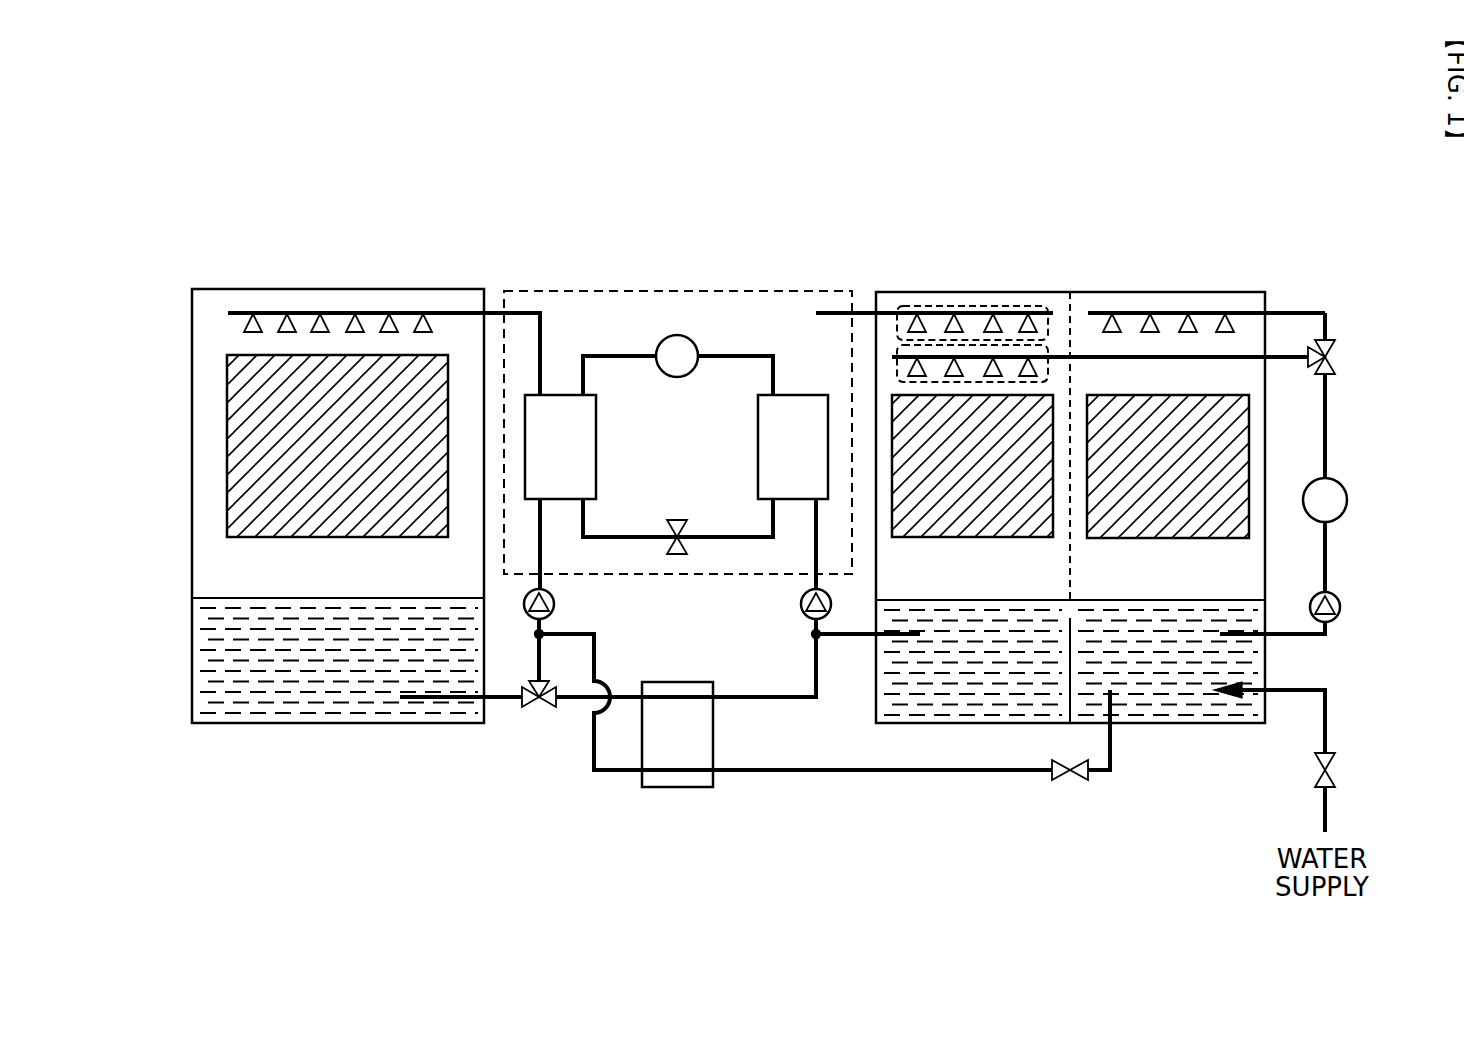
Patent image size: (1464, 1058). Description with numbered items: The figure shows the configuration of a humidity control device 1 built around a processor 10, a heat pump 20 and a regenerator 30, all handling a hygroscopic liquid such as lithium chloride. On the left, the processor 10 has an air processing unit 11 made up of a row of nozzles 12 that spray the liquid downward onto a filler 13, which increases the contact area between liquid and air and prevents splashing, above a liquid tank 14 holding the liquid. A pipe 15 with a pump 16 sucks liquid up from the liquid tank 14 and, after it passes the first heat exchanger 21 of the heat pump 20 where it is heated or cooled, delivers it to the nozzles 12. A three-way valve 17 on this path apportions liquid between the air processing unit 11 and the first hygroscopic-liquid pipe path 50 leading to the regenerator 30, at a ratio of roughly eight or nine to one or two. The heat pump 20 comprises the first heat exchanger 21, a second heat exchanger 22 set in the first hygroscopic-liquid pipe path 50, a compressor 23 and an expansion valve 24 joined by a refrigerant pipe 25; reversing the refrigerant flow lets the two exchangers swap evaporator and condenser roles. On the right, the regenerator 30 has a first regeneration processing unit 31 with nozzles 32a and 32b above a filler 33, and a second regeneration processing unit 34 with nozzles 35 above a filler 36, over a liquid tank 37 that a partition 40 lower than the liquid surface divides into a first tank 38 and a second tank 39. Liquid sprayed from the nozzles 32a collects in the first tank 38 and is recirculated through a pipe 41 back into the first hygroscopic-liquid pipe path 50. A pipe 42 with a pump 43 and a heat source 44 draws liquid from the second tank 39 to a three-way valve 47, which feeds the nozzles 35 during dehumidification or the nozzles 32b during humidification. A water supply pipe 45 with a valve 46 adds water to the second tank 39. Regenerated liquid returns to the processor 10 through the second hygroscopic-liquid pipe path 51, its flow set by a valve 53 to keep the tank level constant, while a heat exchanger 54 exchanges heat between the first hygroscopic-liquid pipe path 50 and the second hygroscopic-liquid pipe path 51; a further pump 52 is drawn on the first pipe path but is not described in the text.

The humidity control device 1 is at (702, 182).
The processor 10 is at (455, 289).
The air processing unit 11 is at (355, 214).
The nozzles 12 is at (423, 312).
The filler 13 is at (237, 387).
The liquid tank 14 is at (200, 655).
The pipe 15 is at (512, 313).
The pump 16 is at (554, 604).
The three-way valve 17 is at (535, 707).
The heat pump 20 is at (677, 291).
The first heat exchanger 21 is at (596, 447).
The second heat exchanger 22 is at (758, 447).
The compressor 23 is at (697, 347).
The expansion valve 24 is at (680, 518).
The refrigerant pipe 25 is at (600, 356).
The regenerator 30 is at (1088, 292).
The first regeneration processing unit 31 is at (1085, 214).
The nozzles 32a is at (930, 306).
The nozzles 32b is at (1048, 372).
The filler 33 is at (878, 393).
The second regeneration processing unit 34 is at (1265, 214).
The nozzles 35 is at (1225, 312).
The filler 36 is at (1237, 400).
The liquid tank 37 is at (1245, 805).
The first tank 38 is at (1045, 708).
The second tank 39 is at (1195, 705).
The partition 40 is at (1073, 640).
The pipe 41 is at (845, 640).
The pipe 42 is at (1330, 425).
The pump 43 is at (1340, 612).
The heat source 44 is at (1347, 505).
The water supply pipe 45 is at (1330, 710).
The valve 46 is at (1335, 770).
The three-way valve 47 is at (1340, 357).
The first hygroscopic-liquid pipe path 50 is at (775, 700).
The second hygroscopic-liquid pipe path 51 is at (883, 775).
The pump 52 is at (801, 604).
The valve 53 is at (1065, 778).
The heat exchanger 54 is at (677, 682).